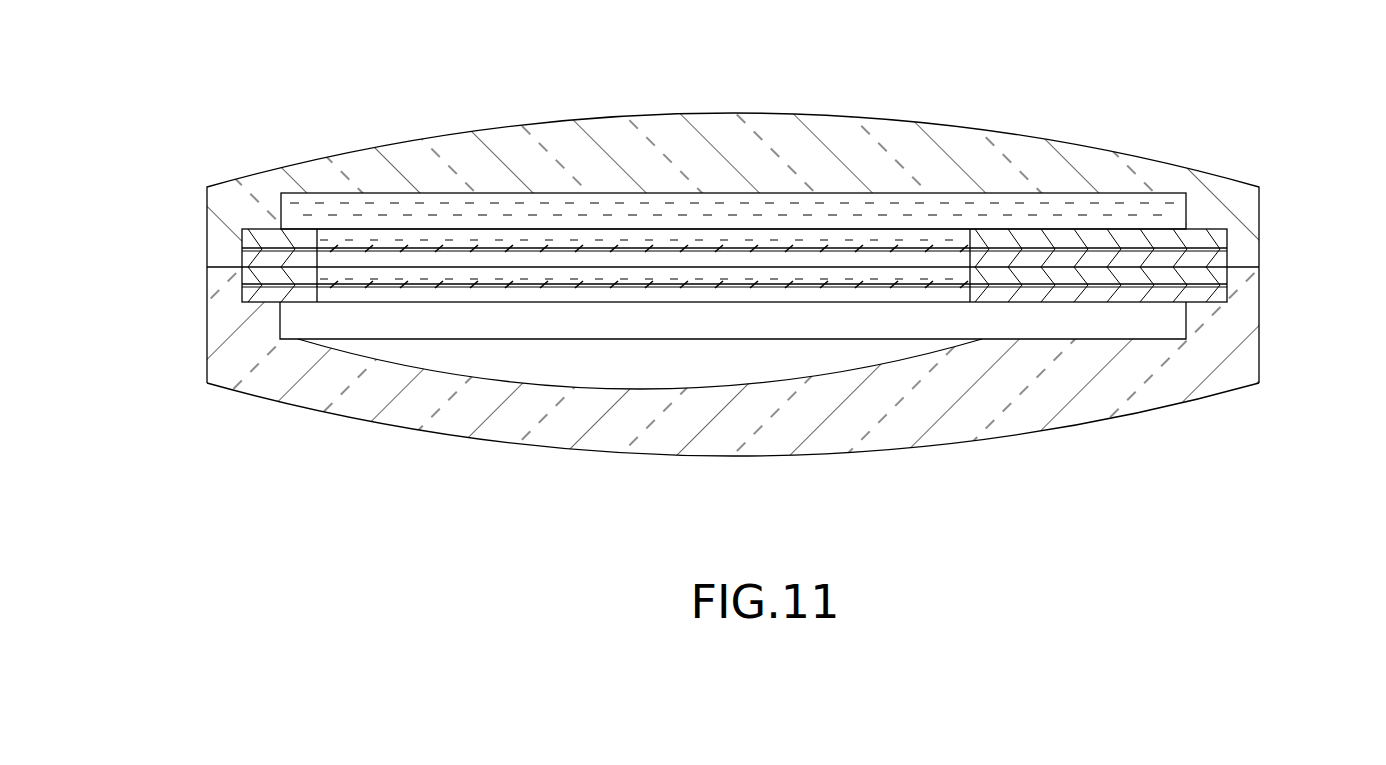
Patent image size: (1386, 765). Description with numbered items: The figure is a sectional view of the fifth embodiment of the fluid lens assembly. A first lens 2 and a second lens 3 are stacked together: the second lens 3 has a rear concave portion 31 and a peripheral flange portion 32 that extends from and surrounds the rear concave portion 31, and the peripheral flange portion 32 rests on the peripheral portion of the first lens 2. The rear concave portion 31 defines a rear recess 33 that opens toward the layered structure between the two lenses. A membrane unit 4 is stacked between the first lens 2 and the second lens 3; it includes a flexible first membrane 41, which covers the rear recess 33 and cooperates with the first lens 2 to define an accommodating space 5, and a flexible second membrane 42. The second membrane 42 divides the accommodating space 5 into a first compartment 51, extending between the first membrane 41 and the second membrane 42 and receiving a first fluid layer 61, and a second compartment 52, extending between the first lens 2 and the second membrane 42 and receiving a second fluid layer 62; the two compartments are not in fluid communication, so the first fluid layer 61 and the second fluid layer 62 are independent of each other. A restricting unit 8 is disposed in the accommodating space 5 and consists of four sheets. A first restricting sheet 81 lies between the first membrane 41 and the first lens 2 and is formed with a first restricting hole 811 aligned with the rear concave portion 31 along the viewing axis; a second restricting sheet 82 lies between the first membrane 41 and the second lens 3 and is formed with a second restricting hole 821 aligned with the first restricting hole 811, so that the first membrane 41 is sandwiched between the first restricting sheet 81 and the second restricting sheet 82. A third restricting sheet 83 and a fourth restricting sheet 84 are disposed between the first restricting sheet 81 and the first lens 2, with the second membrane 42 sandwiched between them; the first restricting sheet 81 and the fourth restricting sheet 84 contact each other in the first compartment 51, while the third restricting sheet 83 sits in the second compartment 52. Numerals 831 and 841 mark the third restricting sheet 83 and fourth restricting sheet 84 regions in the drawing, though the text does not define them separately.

The first lens 2 is at (241, 178).
The second lens 3 is at (220, 387).
The rear concave portion 31 is at (567, 432).
The peripheral flange portion 32 is at (262, 330).
The rear recess 33 is at (643, 376).
The membrane unit 4 is at (662, 266).
The first membrane 41 is at (245, 283).
The second membrane 42 is at (245, 248).
The accommodating space 5 is at (734, 130).
The first compartment 51 is at (605, 260).
The second compartment 52 is at (513, 198).
The first fluid layer 61 is at (363, 265).
The second fluid layer 62 is at (414, 212).
The restricting unit 8 is at (807, 286).
The first restricting sheet 81 is at (1218, 276).
The second restricting sheet 82 is at (1218, 296).
The third restricting sheet 83 is at (1218, 238).
The fourth restricting sheet 84 is at (1218, 258).
The first restricting hole 811 is at (838, 270).
The second restricting hole 821 is at (783, 300).
The third layer surface 831 is at (753, 238).
The fourth layer surface 841 is at (840, 260).